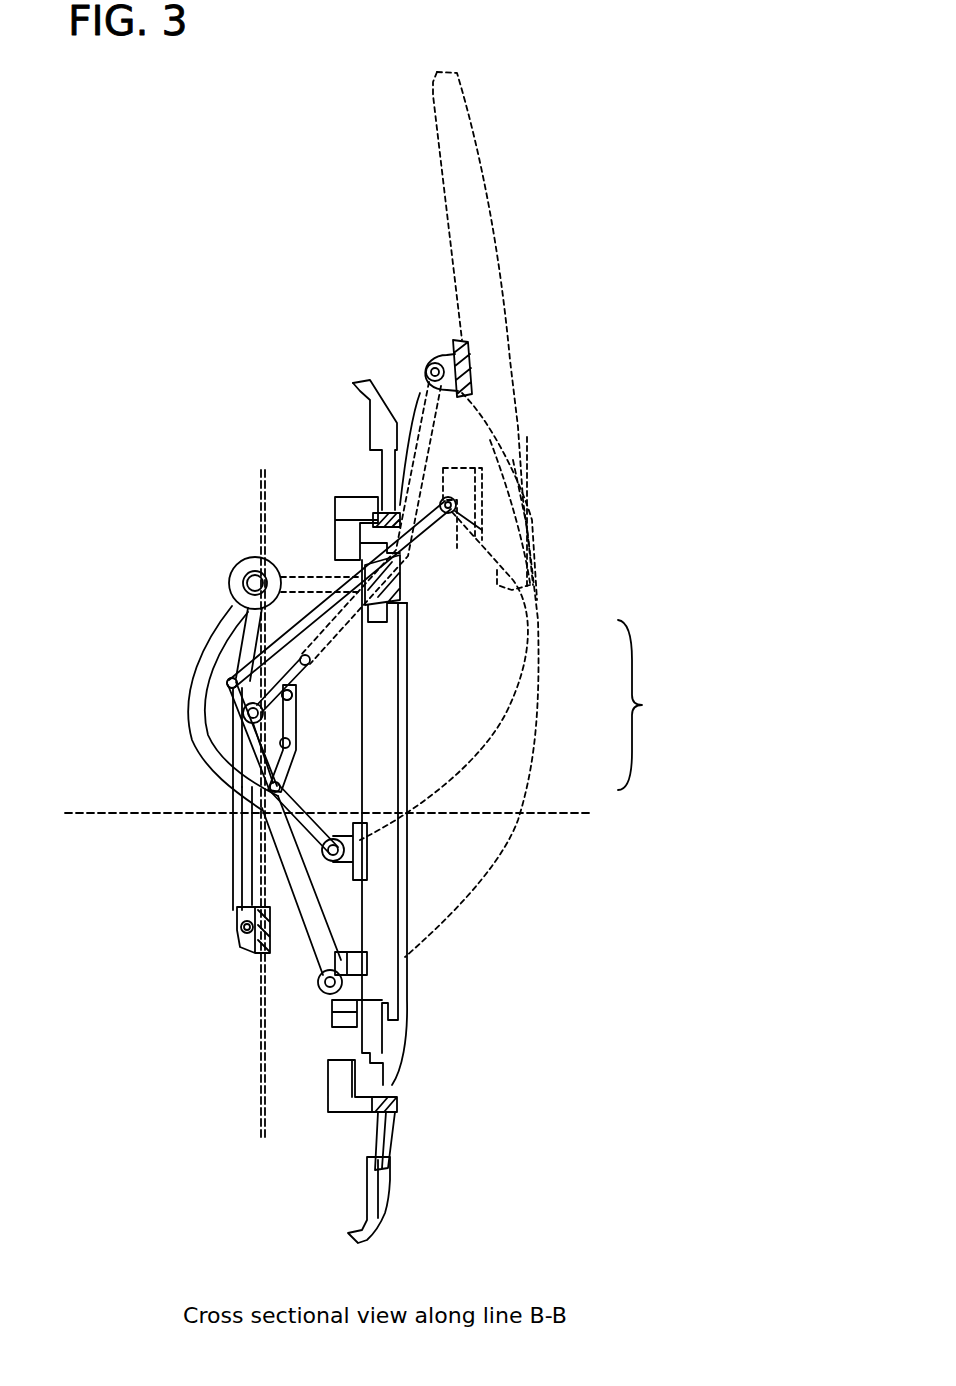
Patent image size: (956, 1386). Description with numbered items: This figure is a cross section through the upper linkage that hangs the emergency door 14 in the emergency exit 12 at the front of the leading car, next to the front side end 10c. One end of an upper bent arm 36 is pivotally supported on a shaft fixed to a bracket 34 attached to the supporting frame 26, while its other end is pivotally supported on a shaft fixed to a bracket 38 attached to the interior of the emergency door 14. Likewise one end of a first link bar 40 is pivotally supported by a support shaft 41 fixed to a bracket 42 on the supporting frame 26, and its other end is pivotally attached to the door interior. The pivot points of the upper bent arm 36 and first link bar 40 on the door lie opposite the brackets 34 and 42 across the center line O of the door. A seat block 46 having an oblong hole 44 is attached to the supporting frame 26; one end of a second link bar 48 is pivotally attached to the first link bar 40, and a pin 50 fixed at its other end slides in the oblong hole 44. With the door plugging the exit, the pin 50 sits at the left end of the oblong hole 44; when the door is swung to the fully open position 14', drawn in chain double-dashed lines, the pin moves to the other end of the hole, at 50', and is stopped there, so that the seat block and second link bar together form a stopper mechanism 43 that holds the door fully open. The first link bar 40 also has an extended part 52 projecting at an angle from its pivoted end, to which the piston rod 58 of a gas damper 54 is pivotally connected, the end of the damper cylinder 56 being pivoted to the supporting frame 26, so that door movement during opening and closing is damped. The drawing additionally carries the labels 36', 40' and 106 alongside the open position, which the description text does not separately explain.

The fully open position of the emergency door 14' is at (407, 514).
The upper pivot bracket 36' is at (433, 379).
The link rod (moved position) 40' is at (367, 523).
The hook member 106 is at (385, 360).
The bracket 34 is at (243, 557).
The bracket 42 is at (223, 637).
The upper bent arm 36 is at (178, 705).
The extended part 52 is at (243, 712).
The piston rod 58 is at (228, 690).
The pin at the other end of the oblong hole 50' is at (329, 660).
The pin 50 is at (429, 738).
The seat block 46 is at (248, 688).
The oblong hole 44 is at (296, 702).
The second link bar 48 is at (282, 780).
The stopper mechanism 43 is at (648, 705).
The support shaft 41 is at (228, 734).
The gas damper 54 is at (222, 834).
The cylinder 56 is at (233, 877).
The first link bar 40 is at (281, 911).
The bracket 38 is at (435, 800).
The emergency door 14 is at (422, 820).
The emergency exit 12 is at (389, 1094).
The front side end 10c is at (384, 1213).
The supporting frame 26 is at (258, 1112).
The center line O is at (530, 815).